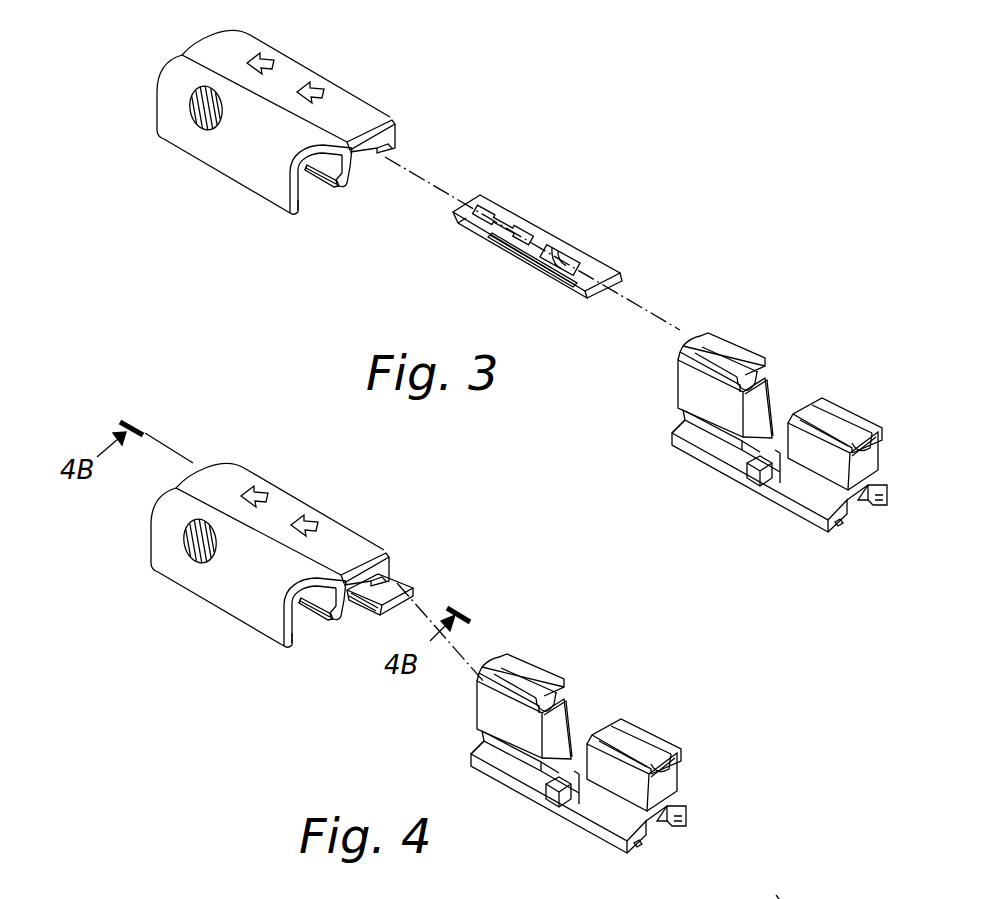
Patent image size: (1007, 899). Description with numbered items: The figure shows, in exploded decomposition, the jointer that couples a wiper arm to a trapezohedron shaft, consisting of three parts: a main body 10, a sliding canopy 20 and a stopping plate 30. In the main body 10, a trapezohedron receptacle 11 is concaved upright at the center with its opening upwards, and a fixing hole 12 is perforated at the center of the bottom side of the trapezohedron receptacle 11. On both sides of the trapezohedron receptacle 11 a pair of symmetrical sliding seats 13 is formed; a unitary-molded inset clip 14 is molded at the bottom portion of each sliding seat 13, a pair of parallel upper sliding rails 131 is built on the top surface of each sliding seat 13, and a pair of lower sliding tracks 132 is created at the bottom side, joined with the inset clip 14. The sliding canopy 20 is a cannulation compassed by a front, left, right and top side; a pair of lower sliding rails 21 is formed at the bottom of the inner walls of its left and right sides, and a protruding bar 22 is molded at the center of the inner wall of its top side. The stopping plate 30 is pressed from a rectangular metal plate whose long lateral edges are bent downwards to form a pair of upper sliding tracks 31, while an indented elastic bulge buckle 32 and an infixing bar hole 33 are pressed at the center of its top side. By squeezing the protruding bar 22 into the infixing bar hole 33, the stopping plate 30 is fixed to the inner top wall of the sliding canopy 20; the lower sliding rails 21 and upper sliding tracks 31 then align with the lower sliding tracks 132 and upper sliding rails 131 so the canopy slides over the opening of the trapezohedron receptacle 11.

In FIG. 3, the main body 10 is at (753, 399).
In FIG. 4, the main body 10 is at (587, 727).
In FIG. 3, the trapezohedron receptacle 11 is at (788, 408).
In FIG. 4, the trapezohedron receptacle 11 is at (569, 797).
In FIG. 3, the fixing hole 12 is at (780, 447).
In FIG. 4, the fixing hole 12 is at (558, 792).
In FIG. 3, the sliding seat 13 is at (688, 386).
In FIG. 4, the sliding seat 13 is at (577, 746).
In FIG. 3, the upper sliding rail 131 is at (713, 332).
In FIG. 4, the upper sliding rail 131 is at (579, 688).
In FIG. 3, the lower sliding track 132 is at (705, 425).
In FIG. 4, the lower sliding track 132 is at (455, 745).
In FIG. 3, the inset clip 14 is at (840, 527).
In FIG. 4, the inset clip 14 is at (660, 826).
In FIG. 3, the sliding canopy 20 is at (302, 73).
In FIG. 4, the sliding canopy 20 is at (270, 534).
In FIG. 3, the lower sliding rail 21 is at (338, 188).
In FIG. 4, the lower sliding rail 21 is at (322, 642).
In FIG. 4, the protruding bar 22 is at (772, 885).
In FIG. 3, the stopping plate 30 is at (595, 266).
In FIG. 4, the stopping plate 30 is at (386, 583).
In FIG. 3, the upper sliding track 31 is at (588, 300).
In FIG. 4, the upper sliding track 31 is at (413, 595).
In FIG. 3, the elastic bulge buckle 32 is at (562, 252).
In FIG. 3, the infixing bar hole 33 is at (486, 212).